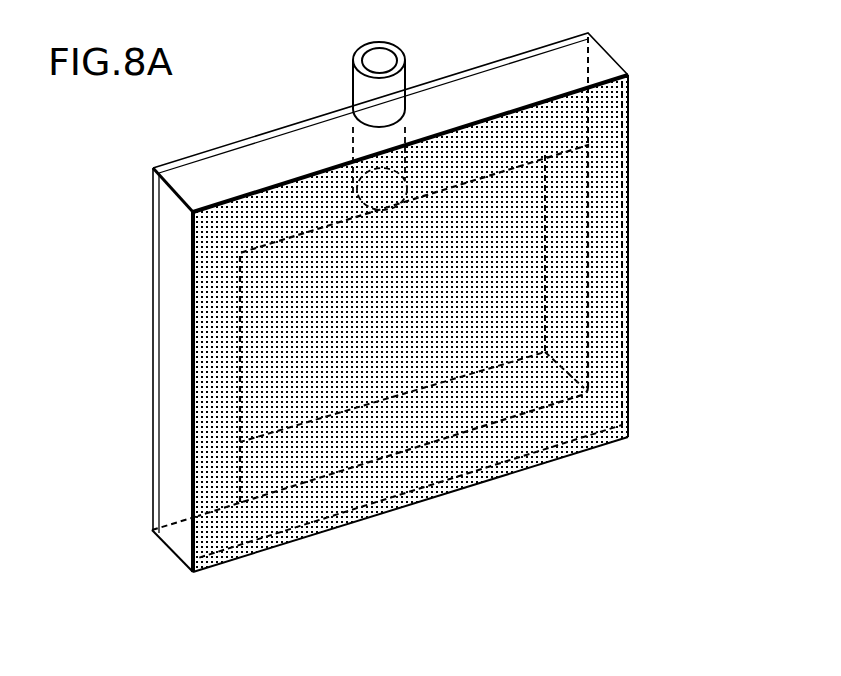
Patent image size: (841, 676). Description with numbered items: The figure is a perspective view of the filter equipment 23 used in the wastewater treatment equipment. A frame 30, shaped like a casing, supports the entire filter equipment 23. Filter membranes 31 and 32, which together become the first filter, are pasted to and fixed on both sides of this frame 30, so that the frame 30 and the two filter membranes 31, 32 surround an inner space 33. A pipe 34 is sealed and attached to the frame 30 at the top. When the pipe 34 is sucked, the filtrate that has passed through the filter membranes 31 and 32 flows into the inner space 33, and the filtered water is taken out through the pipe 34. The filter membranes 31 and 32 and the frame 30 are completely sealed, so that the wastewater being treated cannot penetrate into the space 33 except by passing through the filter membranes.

The filter equipment 23 is at (668, 415).
The frame 30 is at (335, 472).
The filter membrane 31 is at (198, 518).
The filter membrane 32 is at (152, 497).
The inner space 33 is at (473, 333).
The pipe 34 is at (405, 86).